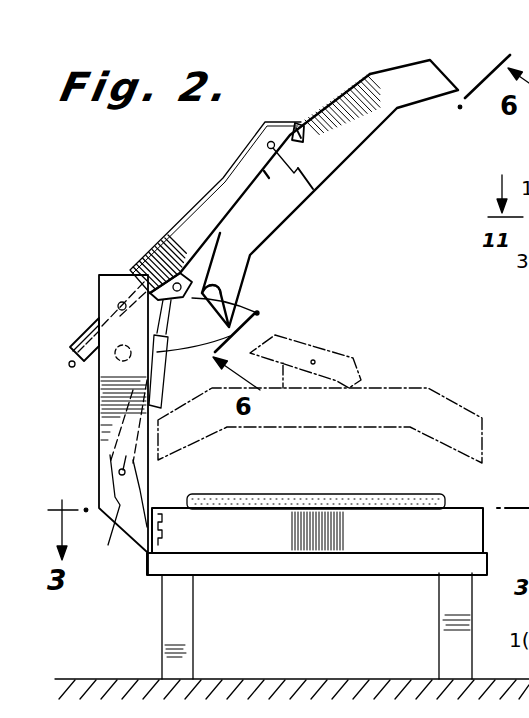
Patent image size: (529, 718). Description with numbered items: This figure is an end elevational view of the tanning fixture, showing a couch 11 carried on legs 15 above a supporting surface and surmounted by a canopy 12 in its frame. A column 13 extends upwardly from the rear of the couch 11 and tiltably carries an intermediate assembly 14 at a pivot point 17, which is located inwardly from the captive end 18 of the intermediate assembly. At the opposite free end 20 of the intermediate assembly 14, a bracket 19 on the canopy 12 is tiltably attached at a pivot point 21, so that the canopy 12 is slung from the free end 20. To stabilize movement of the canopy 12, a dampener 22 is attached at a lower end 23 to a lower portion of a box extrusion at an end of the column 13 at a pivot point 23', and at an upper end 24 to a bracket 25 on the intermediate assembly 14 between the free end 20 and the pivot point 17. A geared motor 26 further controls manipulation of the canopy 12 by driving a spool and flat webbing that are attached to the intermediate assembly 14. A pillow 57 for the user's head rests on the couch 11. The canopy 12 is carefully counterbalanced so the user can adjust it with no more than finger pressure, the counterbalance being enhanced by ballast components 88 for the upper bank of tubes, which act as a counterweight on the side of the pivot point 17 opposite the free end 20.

The couch 11 is at (368, 527).
The canopy 12 is at (407, 80).
The column 13 is at (118, 398).
The intermediate assembly 14 is at (226, 166).
The legs 15 is at (180, 628).
The pivot point 17 is at (122, 302).
The captive end 18 is at (68, 356).
The bracket 19 is at (296, 144).
The free end 20 is at (290, 116).
The pivot point 21 is at (321, 197).
The dampener 22 is at (263, 316).
The lower end 23 is at (92, 416).
The pivot point 23' is at (118, 517).
The upper end 24 is at (207, 292).
The bracket 25 is at (168, 250).
The geared motor 26 is at (157, 377).
The pillow 57 is at (278, 503).
The ballast components 88 is at (88, 320).